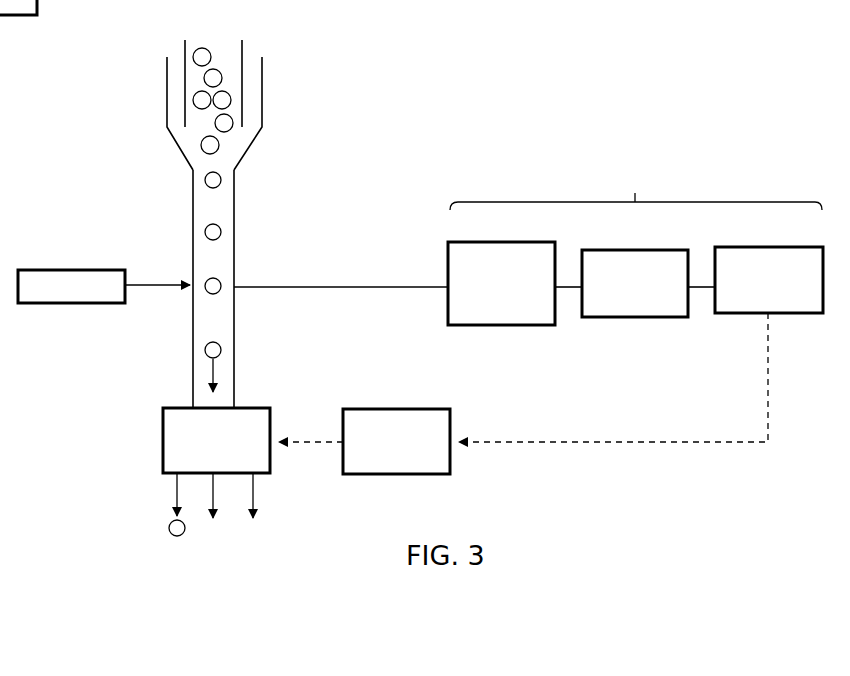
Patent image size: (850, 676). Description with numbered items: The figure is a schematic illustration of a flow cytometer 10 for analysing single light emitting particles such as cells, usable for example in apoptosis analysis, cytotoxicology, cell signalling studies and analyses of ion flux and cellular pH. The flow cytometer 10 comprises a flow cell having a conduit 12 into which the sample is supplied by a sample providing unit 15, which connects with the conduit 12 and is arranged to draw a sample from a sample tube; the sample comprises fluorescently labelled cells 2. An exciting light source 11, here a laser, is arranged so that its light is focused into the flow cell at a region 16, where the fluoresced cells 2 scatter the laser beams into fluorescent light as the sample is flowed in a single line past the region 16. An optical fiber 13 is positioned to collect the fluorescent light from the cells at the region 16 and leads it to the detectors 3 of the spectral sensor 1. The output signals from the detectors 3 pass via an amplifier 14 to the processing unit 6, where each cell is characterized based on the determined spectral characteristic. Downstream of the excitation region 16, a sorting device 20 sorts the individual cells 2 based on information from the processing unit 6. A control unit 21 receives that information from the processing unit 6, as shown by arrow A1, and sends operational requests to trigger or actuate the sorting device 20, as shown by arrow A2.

The spectral sensor 1 is at (636, 190).
The cells 2 is at (222, 180).
The detectors 3 is at (501, 283).
The processing unit 6 is at (769, 280).
The flow cytometer 10 is at (116, 183).
The exciting light source 11 is at (104, 286).
The conduit 12 is at (235, 210).
The optical fiber 13 is at (337, 288).
The amplifier 14 is at (635, 283).
The sample providing unit 15 is at (242, 57).
The region 16 is at (190, 293).
The sorting device 20 is at (216, 472).
The control unit 21 is at (396, 441).
The arrow A1 is at (613, 377).
The arrow A2 is at (311, 430).